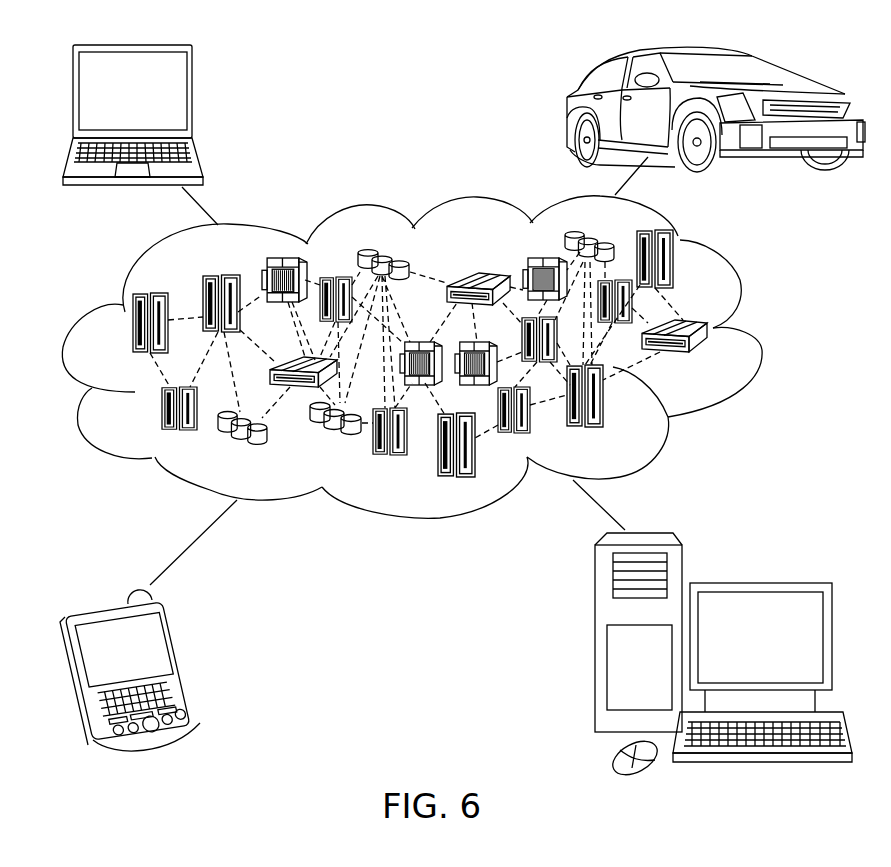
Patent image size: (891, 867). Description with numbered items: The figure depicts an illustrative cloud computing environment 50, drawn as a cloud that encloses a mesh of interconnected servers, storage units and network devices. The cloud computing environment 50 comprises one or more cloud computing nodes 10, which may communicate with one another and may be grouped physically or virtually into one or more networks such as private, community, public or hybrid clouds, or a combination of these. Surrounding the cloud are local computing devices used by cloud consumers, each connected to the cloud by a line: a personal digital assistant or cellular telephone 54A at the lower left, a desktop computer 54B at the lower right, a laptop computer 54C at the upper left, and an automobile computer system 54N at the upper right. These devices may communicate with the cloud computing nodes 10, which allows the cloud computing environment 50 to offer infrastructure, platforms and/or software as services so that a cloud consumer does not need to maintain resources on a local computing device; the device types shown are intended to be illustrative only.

The cloud computing node 10 is at (716, 362).
The cloud computing environment 50 is at (763, 332).
The personal digital assistant or cellular telephone 54A is at (187, 664).
The desktop computer 54B is at (760, 583).
The laptop computer 54C is at (192, 99).
The automobile computer system 54N is at (572, 112).